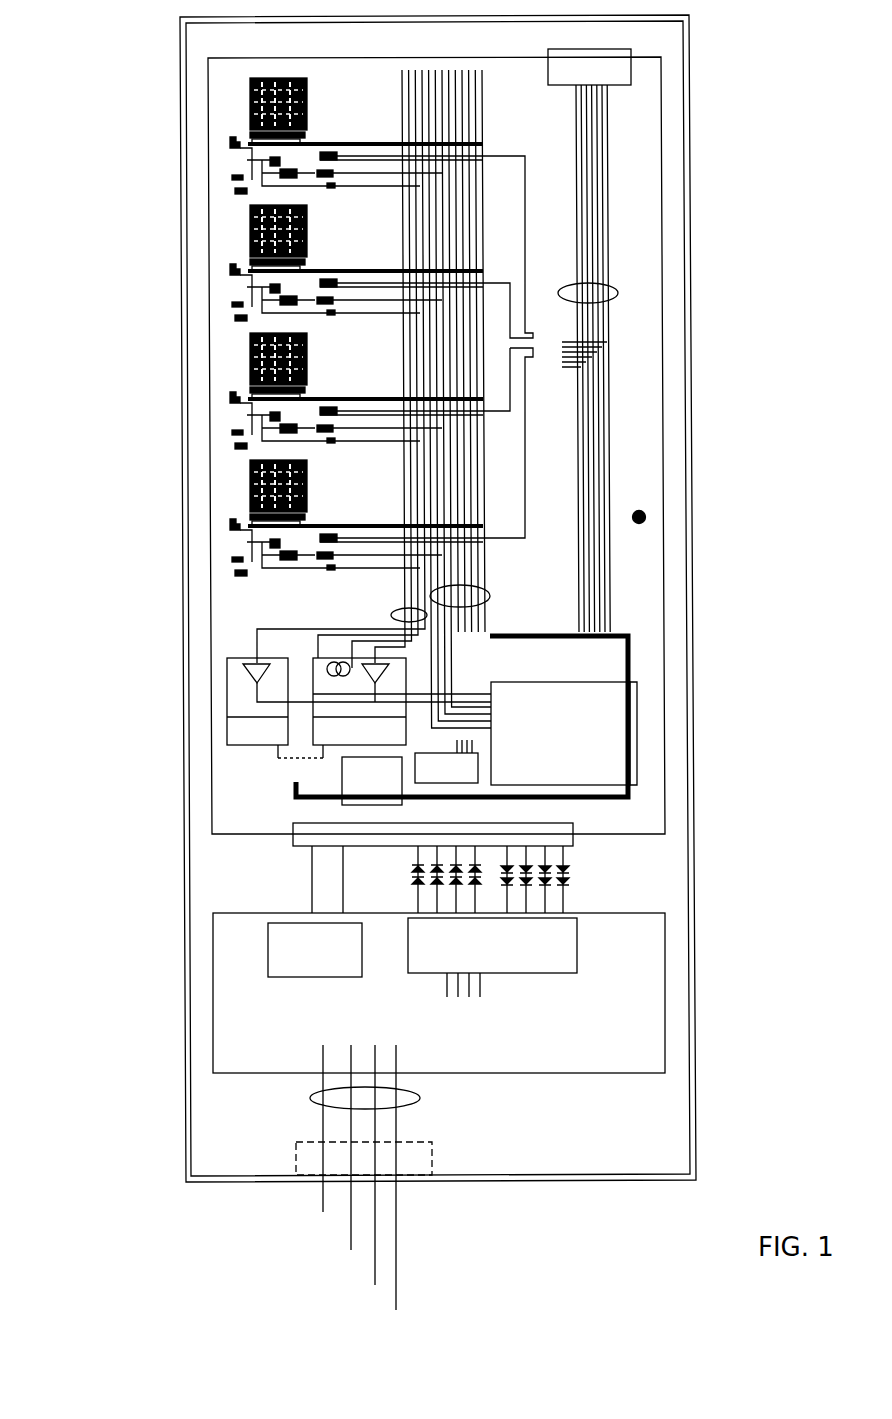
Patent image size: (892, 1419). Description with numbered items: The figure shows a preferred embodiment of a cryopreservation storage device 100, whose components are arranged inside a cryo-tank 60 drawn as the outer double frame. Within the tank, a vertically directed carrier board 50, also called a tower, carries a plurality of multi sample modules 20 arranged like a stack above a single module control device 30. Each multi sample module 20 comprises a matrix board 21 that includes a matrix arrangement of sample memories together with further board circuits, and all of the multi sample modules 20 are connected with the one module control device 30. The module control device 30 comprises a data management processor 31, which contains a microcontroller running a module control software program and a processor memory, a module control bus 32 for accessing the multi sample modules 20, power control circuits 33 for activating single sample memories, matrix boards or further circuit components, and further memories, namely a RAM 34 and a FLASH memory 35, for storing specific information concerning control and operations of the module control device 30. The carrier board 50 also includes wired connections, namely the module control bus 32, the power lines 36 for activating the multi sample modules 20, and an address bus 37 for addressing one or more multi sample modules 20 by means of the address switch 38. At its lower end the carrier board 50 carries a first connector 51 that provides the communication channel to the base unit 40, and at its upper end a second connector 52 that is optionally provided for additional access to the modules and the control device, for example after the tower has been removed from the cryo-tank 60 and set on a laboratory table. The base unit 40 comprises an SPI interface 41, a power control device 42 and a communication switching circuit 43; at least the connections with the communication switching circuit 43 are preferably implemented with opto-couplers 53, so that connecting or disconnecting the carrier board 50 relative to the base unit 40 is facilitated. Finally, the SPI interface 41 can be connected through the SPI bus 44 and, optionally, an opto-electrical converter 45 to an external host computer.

The cryopreservation storage device 100 is at (192, 150).
The multi sample module 20 is at (314, 327).
The matrix board 21 is at (160, 440).
The module control device 30 is at (366, 449).
The data management processor 31 is at (549, 737).
The module control bus 32 is at (490, 596).
The power control circuit 33 is at (359, 708).
The RAM 34 is at (372, 781).
The FLASH memory 35 is at (446, 762).
The power lines 36 is at (391, 613).
The address bus 37 is at (618, 293).
The address switch 38 is at (550, 378).
The base unit 40 is at (380, 1010).
The SPI interface 41 is at (452, 1025).
The power control device 42 is at (315, 950).
The communication switching circuit 43 is at (492, 957).
The SPI bus 44 is at (420, 1098).
The opto-electrical converter 45 is at (418, 1160).
The carrier board 50 is at (646, 517).
The first connector 51 is at (573, 833).
The second connector 52 is at (623, 77).
The opto-couplers 53 is at (569, 880).
The cryo-tank 60 is at (694, 1005).